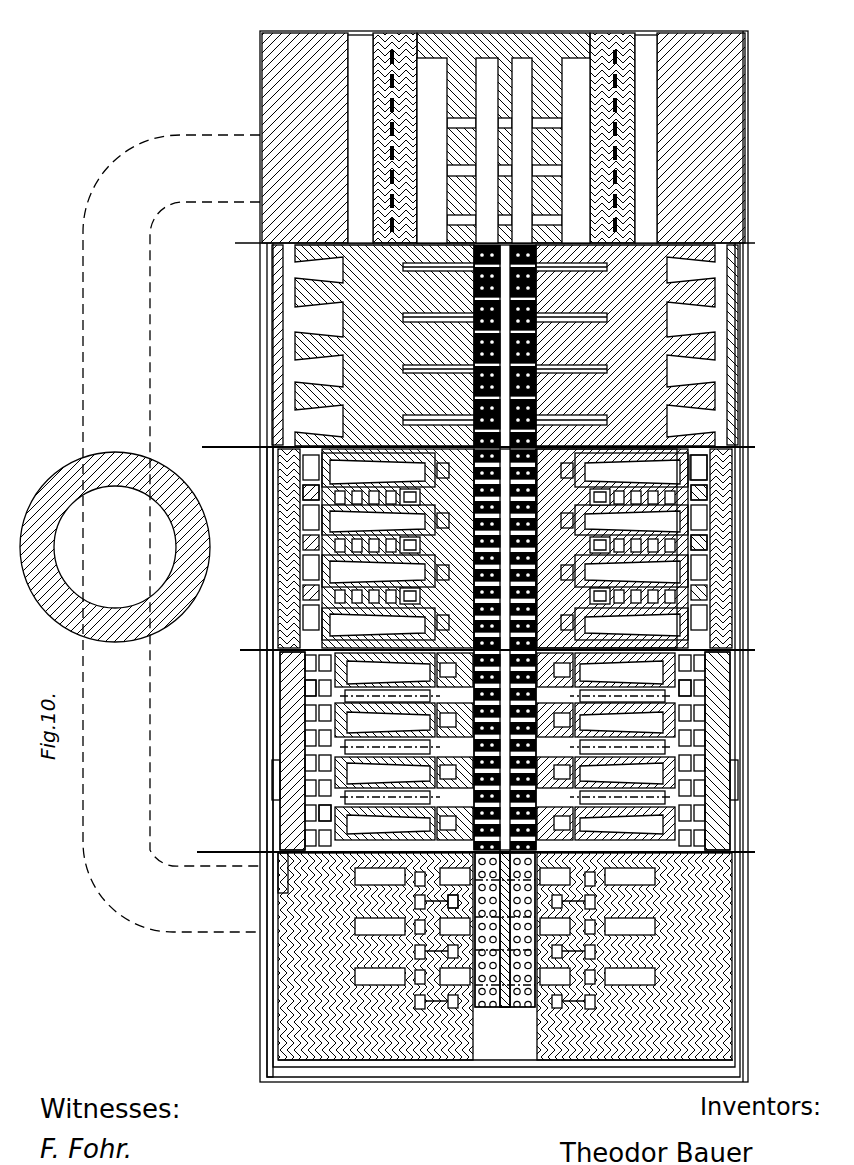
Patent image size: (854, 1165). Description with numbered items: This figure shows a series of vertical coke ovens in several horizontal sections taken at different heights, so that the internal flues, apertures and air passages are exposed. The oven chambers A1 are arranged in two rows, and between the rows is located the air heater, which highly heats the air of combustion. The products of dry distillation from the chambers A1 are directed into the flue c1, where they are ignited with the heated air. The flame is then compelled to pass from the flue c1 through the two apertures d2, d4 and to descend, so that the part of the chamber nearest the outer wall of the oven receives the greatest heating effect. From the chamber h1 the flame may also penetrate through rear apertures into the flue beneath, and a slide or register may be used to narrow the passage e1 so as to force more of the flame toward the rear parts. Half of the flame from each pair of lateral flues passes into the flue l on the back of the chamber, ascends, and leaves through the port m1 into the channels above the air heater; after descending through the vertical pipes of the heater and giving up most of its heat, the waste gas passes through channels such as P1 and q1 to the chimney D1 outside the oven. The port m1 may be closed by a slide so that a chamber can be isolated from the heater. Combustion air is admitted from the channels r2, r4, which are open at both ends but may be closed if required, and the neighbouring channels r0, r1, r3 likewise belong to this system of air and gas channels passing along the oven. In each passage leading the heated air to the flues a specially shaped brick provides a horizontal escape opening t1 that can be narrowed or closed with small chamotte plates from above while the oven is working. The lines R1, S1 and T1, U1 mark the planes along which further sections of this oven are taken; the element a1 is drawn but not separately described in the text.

The chimney D1 is at (72, 468).
The air channel r4 is at (358, 80).
The channel r0 is at (427, 115).
The air channel r2 is at (485, 117).
The channel r1 is at (522, 103).
The waste gas channel q1 is at (572, 100).
The channel r3 is at (647, 82).
The flue l is at (340, 425).
The oven chamber A1 is at (333, 467).
The flue c1 is at (303, 595).
The waste gas channel P1 is at (282, 700).
The aperture d2 is at (307, 762).
The section line R1 is at (280, 783).
The aperture d4 is at (307, 840).
The escape opening t1 is at (452, 955).
The port m1 is at (505, 1000).
The section line U1 is at (700, 455).
The passage e1 is at (700, 520).
The chamber h1 is at (700, 597).
The section line T1 is at (748, 660).
The block a1 is at (700, 690).
The section line S1 is at (748, 795).